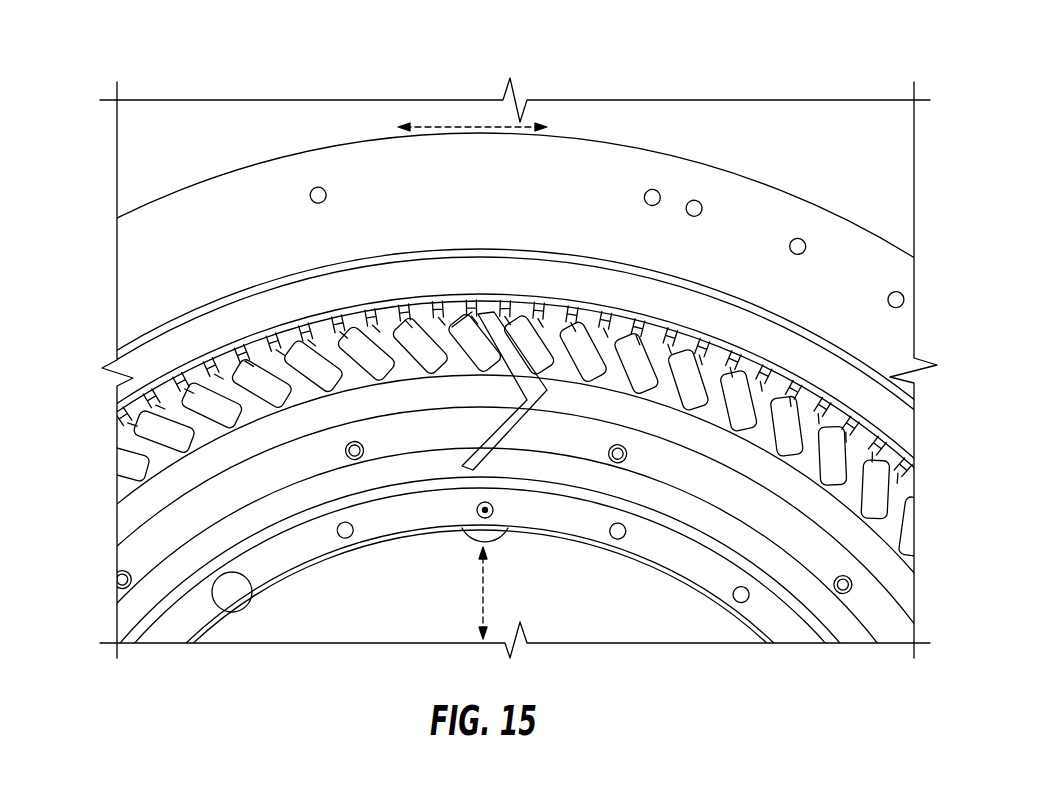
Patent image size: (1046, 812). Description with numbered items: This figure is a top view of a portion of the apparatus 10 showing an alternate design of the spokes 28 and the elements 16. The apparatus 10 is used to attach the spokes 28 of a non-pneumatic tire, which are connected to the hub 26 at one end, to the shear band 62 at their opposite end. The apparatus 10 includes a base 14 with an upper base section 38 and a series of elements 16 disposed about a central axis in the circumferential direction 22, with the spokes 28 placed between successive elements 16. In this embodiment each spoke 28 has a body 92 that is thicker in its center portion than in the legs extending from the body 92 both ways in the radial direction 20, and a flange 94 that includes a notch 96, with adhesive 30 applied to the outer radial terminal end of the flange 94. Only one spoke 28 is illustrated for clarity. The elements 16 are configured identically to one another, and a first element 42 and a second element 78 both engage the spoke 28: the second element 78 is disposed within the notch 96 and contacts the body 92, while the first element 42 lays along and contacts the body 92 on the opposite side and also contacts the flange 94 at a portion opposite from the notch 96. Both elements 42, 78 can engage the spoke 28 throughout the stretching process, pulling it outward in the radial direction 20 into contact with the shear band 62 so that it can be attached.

The apparatus 10 is at (126, 58).
The base 14 is at (136, 262).
The elements 16 is at (565, 345).
The radial direction 20 is at (483, 595).
The circumferential direction 22 is at (457, 122).
The hub 26 is at (658, 515).
The spokes 28 is at (502, 462).
The adhesive 30 is at (472, 298).
The upper base section 38 is at (900, 337).
The first element 42 is at (470, 357).
The shear band 62 is at (900, 430).
The second element 78 is at (540, 368).
The body 92 is at (525, 397).
The flange 94 is at (458, 312).
The notch 96 is at (506, 327).